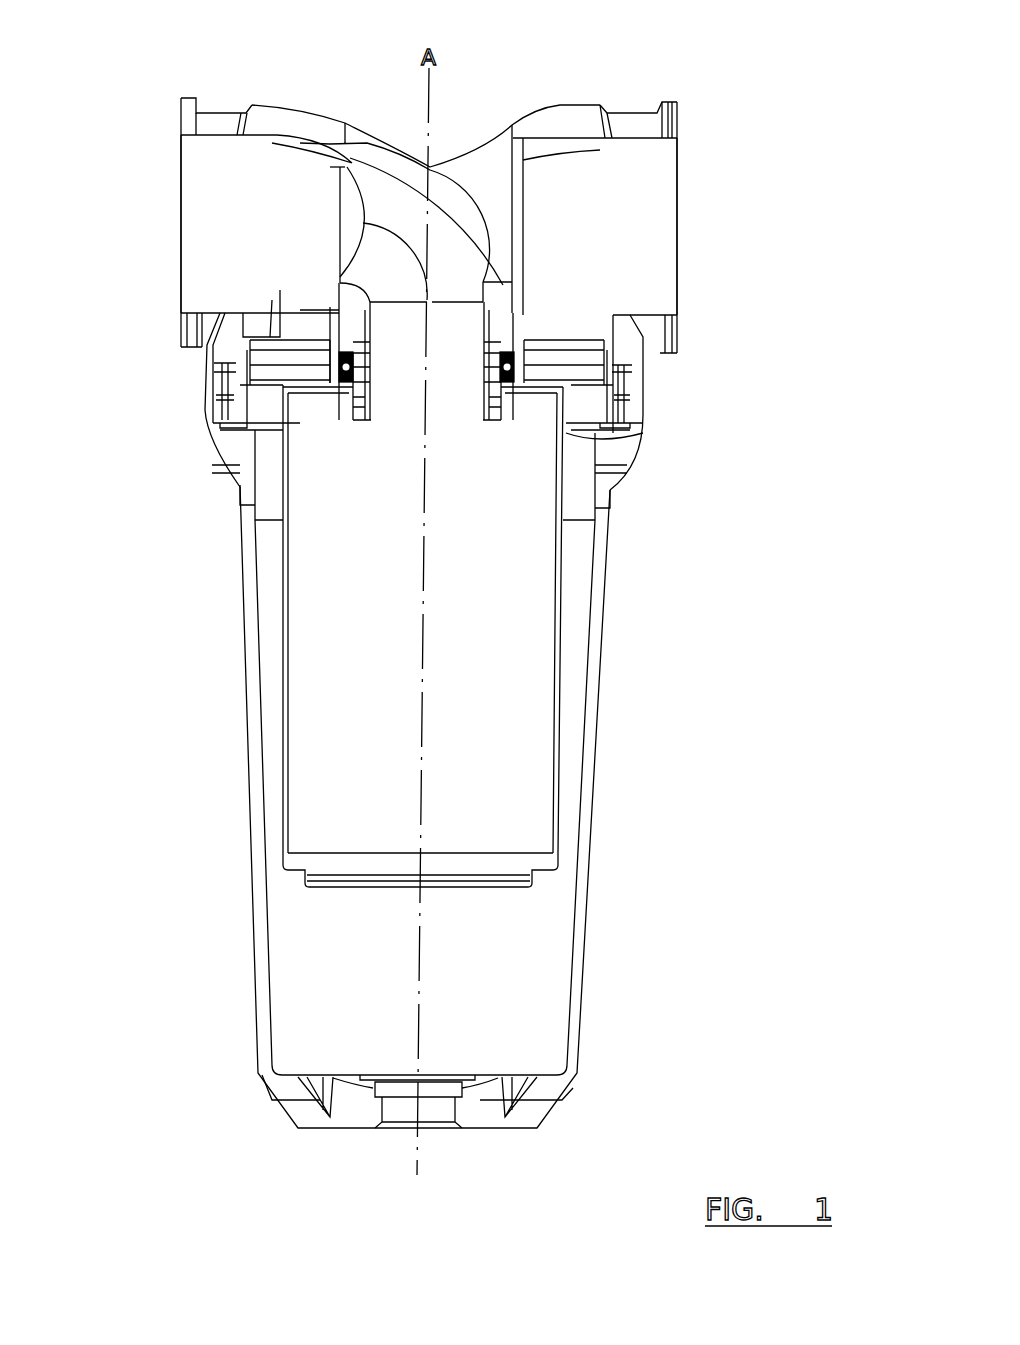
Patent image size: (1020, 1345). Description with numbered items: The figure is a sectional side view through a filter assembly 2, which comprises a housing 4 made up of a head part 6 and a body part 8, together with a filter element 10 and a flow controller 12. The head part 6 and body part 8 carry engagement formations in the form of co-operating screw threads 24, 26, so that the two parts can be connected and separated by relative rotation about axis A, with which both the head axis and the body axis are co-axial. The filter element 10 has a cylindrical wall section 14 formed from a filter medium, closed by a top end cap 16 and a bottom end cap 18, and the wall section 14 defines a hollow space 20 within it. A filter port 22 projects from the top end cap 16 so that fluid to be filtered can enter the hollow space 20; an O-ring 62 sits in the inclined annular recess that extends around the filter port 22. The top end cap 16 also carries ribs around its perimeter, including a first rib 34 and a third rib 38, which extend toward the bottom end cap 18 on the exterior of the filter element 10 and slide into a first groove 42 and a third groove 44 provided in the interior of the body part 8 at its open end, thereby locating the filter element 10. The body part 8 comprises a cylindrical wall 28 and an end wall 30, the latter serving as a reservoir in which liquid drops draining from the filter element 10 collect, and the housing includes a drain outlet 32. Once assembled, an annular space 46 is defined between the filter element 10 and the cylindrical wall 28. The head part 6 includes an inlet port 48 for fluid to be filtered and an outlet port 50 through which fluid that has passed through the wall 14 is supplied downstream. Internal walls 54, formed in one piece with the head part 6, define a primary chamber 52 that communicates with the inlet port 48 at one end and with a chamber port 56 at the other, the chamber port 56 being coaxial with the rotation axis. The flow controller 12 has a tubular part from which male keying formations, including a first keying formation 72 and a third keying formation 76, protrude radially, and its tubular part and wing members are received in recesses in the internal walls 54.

The filter assembly 2 is at (632, 93).
The housing 4 is at (638, 497).
The head part 6 is at (562, 120).
The body part 8 is at (597, 738).
The filter element 10 is at (330, 337).
The flow controller 12 is at (365, 318).
The cylindrical wall section 14 is at (565, 800).
The top end cap 16 is at (540, 372).
The bottom end cap 18 is at (530, 898).
The hollow space 20 is at (330, 680).
The filter port 22 is at (487, 360).
The screw thread 24 is at (240, 378).
The screw thread 26 is at (223, 407).
The cylindrical wall 28 is at (262, 940).
The end wall 30 is at (313, 1063).
The drain outlet 32 is at (437, 1112).
The first rib 34 is at (258, 410).
The third rib 38 is at (548, 433).
The first groove 42 is at (248, 425).
The third groove 44 is at (600, 390).
The annular space 46 is at (583, 570).
The inlet port 48 is at (181, 172).
The outlet port 50 is at (680, 128).
The primary chamber 52 is at (298, 224).
The internal walls 54 is at (307, 300).
The chamber port 56 is at (343, 390).
The O-ring 62 is at (523, 340).
The first male keying formation 72 is at (360, 405).
The third male keying formation 76 is at (506, 400).